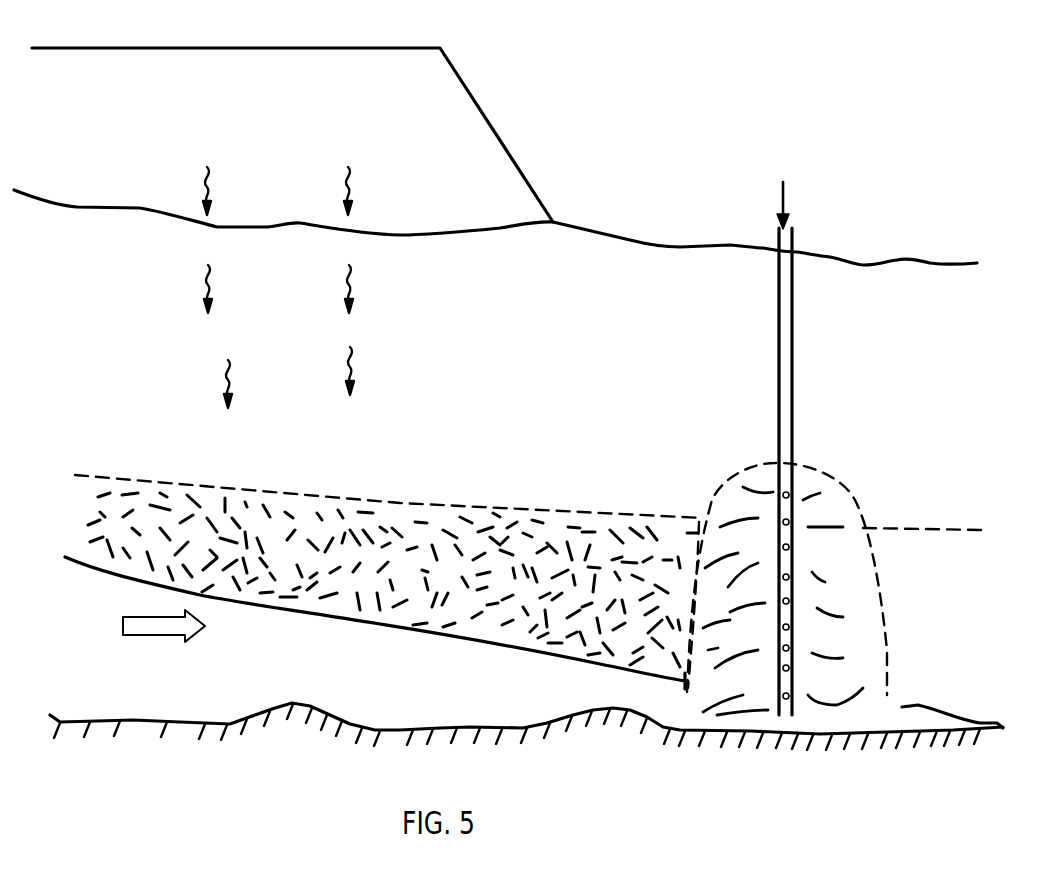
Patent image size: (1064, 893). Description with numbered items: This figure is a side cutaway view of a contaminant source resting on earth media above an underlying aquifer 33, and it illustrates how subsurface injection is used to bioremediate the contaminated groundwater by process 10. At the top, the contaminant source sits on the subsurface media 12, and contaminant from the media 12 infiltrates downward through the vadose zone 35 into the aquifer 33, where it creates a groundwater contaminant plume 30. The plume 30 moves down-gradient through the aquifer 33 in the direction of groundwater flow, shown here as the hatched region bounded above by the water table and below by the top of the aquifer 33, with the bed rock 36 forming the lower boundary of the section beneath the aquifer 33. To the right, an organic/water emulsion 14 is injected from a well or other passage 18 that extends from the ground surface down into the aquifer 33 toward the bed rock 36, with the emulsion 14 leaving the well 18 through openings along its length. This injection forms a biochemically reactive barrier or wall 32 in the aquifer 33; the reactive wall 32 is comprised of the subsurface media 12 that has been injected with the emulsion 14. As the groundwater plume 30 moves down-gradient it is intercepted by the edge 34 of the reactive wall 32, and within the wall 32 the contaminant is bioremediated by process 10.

The process 10 is at (697, 135).
The subsurface media 12 is at (452, 124).
The organic/water emulsion 14 is at (790, 187).
The wells or other passages 18 is at (794, 331).
The groundwater contaminant plume 30 is at (586, 525).
The biochemically reactive barrier or wall 32 is at (888, 636).
The aquifer 33 is at (138, 686).
The edge of the reactive wall 34 is at (695, 631).
The vadose zone 35 is at (134, 349).
The bed rock 36 is at (435, 720).